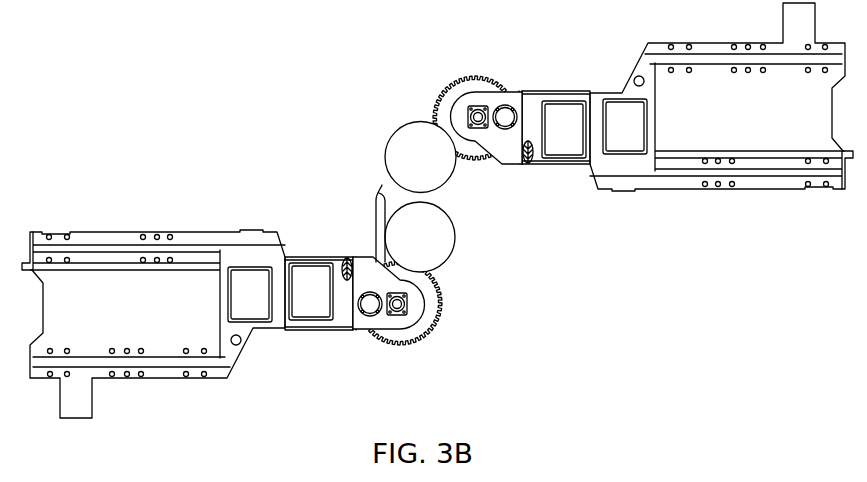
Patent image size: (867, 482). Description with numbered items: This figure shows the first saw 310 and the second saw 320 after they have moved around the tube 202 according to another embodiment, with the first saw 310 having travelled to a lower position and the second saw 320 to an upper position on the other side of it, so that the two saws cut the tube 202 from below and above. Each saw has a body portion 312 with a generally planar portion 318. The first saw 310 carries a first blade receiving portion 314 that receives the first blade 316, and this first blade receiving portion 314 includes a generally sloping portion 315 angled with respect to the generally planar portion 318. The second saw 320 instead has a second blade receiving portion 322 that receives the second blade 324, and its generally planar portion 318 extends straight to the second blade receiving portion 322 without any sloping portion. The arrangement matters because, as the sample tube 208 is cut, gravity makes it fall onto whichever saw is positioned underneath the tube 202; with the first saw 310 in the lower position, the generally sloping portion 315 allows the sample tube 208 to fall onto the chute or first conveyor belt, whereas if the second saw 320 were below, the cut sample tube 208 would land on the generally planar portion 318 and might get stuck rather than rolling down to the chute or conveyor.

The tube 202 is at (422, 121).
The sample tube 208 is at (455, 242).
The first saw 310 is at (276, 329).
The body portion 312 is at (312, 256).
The first blade receiving portion 314 is at (370, 257).
The generally sloping portion 315 is at (382, 185).
The first blade 316 is at (397, 343).
The generally planar portion 318 is at (533, 89).
The second saw 320 is at (535, 165).
The second blade receiving portion 322 is at (489, 152).
The second blade 324 is at (482, 77).